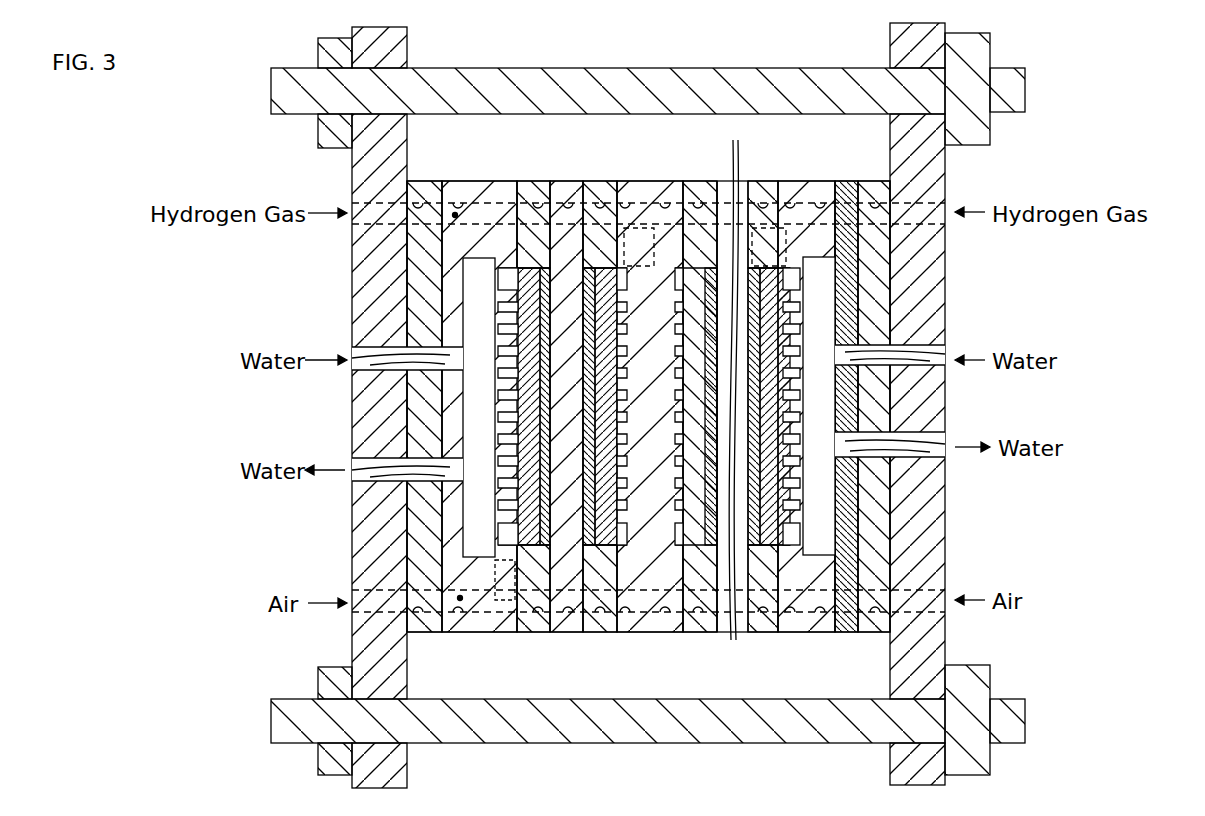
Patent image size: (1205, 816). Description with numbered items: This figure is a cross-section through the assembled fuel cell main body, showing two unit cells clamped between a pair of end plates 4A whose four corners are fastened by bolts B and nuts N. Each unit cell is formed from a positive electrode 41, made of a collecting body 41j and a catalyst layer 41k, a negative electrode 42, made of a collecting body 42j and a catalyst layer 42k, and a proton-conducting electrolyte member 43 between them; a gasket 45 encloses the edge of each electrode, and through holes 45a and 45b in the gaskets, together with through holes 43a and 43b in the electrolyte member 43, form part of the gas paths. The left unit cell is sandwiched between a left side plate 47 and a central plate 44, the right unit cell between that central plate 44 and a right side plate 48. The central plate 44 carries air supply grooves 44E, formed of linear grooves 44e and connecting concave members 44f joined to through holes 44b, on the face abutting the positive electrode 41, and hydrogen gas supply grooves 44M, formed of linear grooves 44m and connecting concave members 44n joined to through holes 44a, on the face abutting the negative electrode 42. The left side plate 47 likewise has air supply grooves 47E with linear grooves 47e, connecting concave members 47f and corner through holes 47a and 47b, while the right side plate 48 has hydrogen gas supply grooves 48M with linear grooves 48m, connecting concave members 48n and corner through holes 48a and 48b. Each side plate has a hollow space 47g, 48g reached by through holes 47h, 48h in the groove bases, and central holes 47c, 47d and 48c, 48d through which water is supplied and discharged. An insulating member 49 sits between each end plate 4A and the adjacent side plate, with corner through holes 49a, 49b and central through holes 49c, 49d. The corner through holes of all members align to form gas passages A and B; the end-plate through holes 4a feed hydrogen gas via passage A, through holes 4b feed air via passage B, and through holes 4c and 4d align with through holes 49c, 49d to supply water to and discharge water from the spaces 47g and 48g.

The end plate 4A is at (355, 158).
The through hole 4a is at (352, 207).
The through hole 4b is at (352, 612).
The through hole 4c is at (352, 347).
The through hole 4d is at (352, 458).
The positive electrode 41 is at (586, 775).
The collecting body 41j is at (512, 700).
The catalyst layer 41k is at (560, 700).
The negative electrode 42 is at (818, 150).
The catalyst layer 42k is at (757, 230).
The collecting body 42j is at (785, 250).
The electrolyte member 43 is at (566, 183).
The through hole 43a is at (578, 186).
The through hole 43b is at (566, 600).
The central plate 44 is at (728, 260).
The air supply groove 44E is at (700, 270).
The hydrogen gas supply groove 44M is at (731, 182).
The through hole 44a is at (648, 230).
The through hole 44b is at (650, 545).
The linear groove 44e is at (668, 545).
The connecting concave member 44f is at (688, 545).
The linear groove 44m is at (648, 545).
The connecting concave member 44n is at (650, 270).
The gasket 45 is at (525, 183).
The through hole 45a is at (533, 186).
The through hole 45b is at (528, 545).
The left side plate 47 is at (490, 183).
The air supply groove 47E is at (492, 405).
The through hole 47a is at (455, 183).
The through hole 47b is at (478, 612).
The hole 47c is at (450, 366).
The hole 47d is at (352, 470).
The linear groove 47e is at (500, 328).
The connecting concave member 47f is at (503, 600).
The hollow space 47g is at (455, 430).
The through hole 47h is at (500, 492).
The right side plate 48 is at (845, 183).
The hydrogen gas supply groove 48M is at (850, 335).
The through hole 48a is at (800, 250).
The through hole 48b is at (810, 612).
The hole 48c is at (890, 378).
The hole 48d is at (890, 462).
The hollow space 48g is at (820, 398).
The through hole 48h is at (800, 327).
The linear groove 48m is at (800, 490).
The connecting concave member 48n is at (822, 182).
The insulating member 49 is at (435, 183).
The through hole 49a is at (432, 182).
The through hole 49b is at (418, 612).
The through hole 49c is at (352, 352).
The through hole 49d is at (458, 470).
The gas passage A is at (455, 215).
The gas passage B is at (460, 598).
The nut N is at (318, 760).